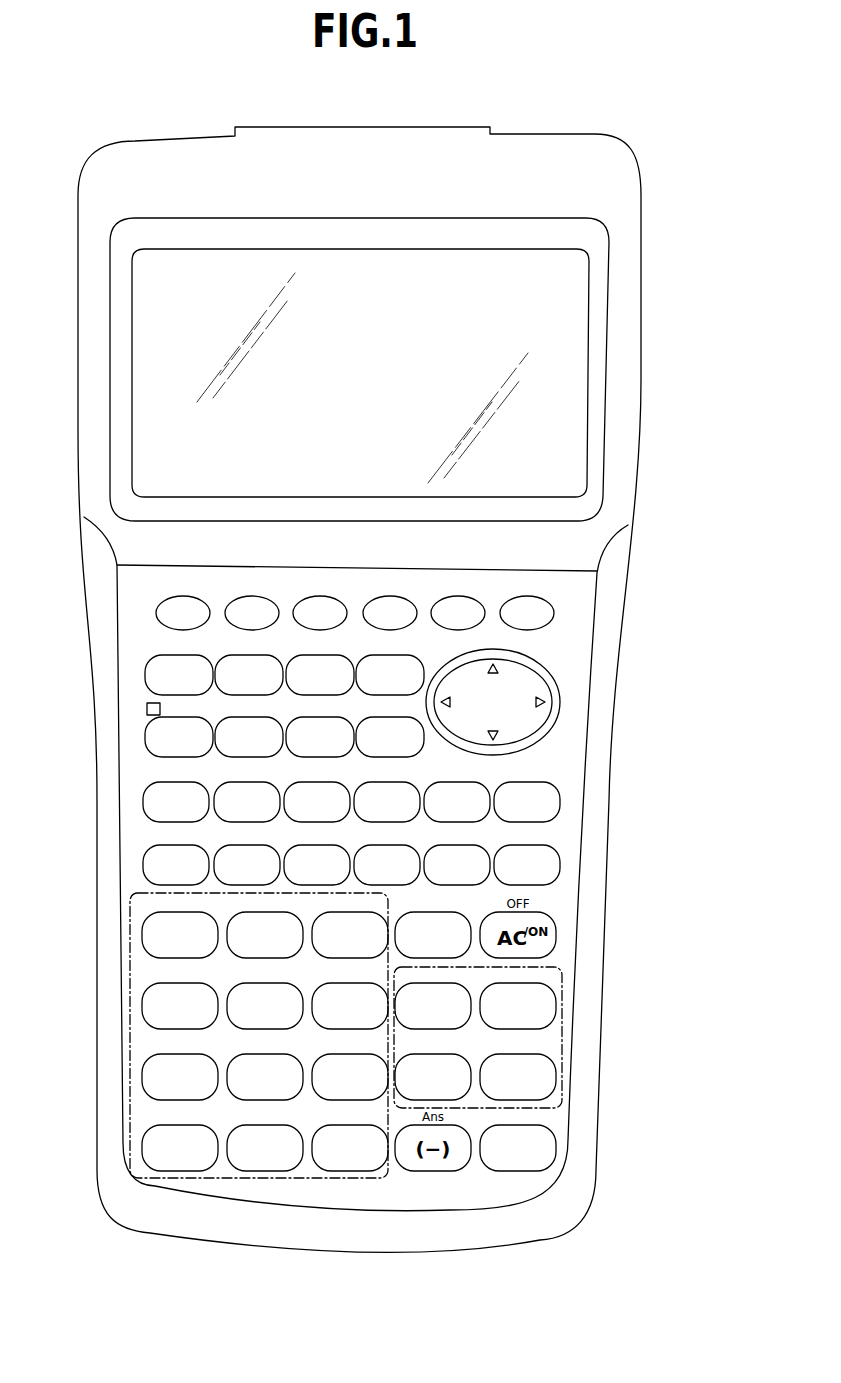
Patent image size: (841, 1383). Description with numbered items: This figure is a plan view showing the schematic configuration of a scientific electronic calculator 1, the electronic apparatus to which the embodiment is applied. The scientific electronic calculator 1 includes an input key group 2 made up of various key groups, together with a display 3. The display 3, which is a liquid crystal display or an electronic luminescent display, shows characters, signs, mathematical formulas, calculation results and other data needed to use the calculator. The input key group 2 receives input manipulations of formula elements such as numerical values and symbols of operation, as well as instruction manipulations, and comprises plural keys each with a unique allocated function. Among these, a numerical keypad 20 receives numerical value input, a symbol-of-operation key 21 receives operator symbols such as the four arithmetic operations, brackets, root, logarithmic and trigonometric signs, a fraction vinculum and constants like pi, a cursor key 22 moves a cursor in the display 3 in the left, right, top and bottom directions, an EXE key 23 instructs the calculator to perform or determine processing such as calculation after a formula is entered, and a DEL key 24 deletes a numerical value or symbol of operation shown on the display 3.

The scientific electronic calculator 1 is at (98, 120).
The input key group 2 is at (69, 579).
The display 3 is at (612, 333).
The numerical keypad 20 is at (245, 1180).
The symbol-of-operation key 21 is at (563, 1034).
The cursor key 22 is at (560, 680).
The EXE key 23 is at (527, 1173).
The DEL key 24 is at (458, 912).